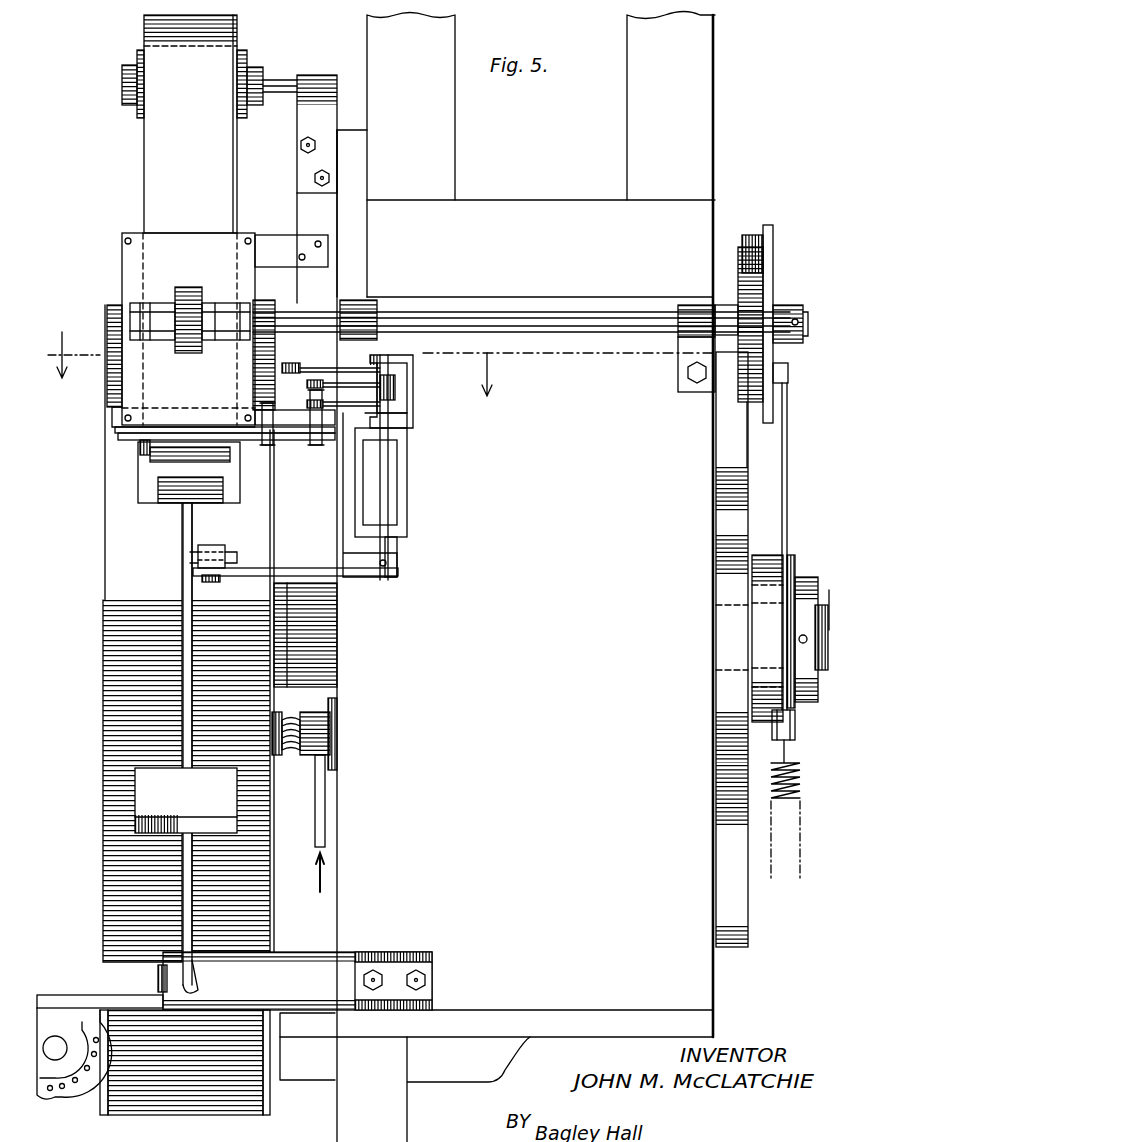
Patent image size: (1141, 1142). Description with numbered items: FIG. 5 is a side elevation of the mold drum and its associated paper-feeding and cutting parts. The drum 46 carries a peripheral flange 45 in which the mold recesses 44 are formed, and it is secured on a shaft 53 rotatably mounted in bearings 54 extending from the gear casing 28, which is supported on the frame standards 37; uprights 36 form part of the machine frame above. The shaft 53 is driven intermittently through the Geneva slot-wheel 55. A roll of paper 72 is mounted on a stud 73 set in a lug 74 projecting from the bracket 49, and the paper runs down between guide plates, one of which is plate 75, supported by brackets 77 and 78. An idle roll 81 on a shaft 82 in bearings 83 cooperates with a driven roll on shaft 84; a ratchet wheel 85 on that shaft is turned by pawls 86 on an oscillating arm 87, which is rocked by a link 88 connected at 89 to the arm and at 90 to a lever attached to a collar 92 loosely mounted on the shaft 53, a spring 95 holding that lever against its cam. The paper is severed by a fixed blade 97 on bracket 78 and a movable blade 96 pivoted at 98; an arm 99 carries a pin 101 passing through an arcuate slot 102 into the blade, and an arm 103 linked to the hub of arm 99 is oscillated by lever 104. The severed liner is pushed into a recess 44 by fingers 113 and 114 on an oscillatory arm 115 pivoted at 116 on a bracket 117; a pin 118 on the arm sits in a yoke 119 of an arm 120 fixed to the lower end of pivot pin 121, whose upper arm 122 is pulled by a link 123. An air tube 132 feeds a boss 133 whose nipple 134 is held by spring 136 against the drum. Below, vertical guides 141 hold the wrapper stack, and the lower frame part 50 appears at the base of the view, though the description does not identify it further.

The casing 28 is at (377, 636).
The uprights 36 is at (441, 154).
The frame standards 37 is at (405, 1077).
The mold recesses 44 is at (142, 483).
The peripheral flange 45 is at (118, 548).
The drum 46 is at (103, 651).
The bracket 49 is at (358, 146).
The base frame 50 is at (175, 1108).
The shaft 53 is at (822, 590).
The bearings 54 is at (325, 637).
The slot-wheel 55 is at (730, 428).
The roll of paper 72 is at (237, 36).
The stud 73 is at (276, 84).
The lug 74 is at (318, 82).
The guide plate 75 is at (196, 248).
The bracket 77 is at (272, 244).
The supporting bracket 78 is at (281, 416).
The idle roll 81 is at (190, 297).
The shaft 82 is at (488, 318).
The bearings 83 is at (375, 306).
The shaft 84 is at (729, 308).
The ratchet wheel 85 is at (750, 298).
The pawls 86 is at (765, 266).
The oscillating arm 87 is at (771, 228).
The link 88 is at (788, 490).
The connection 89 is at (789, 373).
The connection 90 is at (786, 736).
The collar 92 is at (790, 560).
The spring 95 is at (790, 790).
The movable cutting blade 96 is at (118, 438).
The fixed blade 97 is at (115, 430).
The pivot 98 is at (263, 443).
The arm 99 is at (372, 423).
The pin 101 is at (317, 447).
The transverse arcuate slot 102 is at (312, 432).
The arm 103 is at (352, 372).
The lever 104 is at (290, 363).
The member 113 is at (148, 452).
The member 114 is at (170, 493).
The oscillatory arm 115 is at (183, 569).
The pivot 116 is at (158, 980).
The bracket 117 is at (314, 956).
The projecting pin 118 is at (241, 551).
The yoke 119 is at (222, 541).
The arm 120 is at (315, 570).
The pivot pin 121 is at (392, 477).
The arm 122 is at (370, 392).
The link 123 is at (316, 380).
The tube 132 is at (323, 800).
The boss 133 is at (320, 734).
The nipple 134 is at (279, 756).
The spring 136 is at (291, 720).
The vertical guides 141 is at (108, 1103).